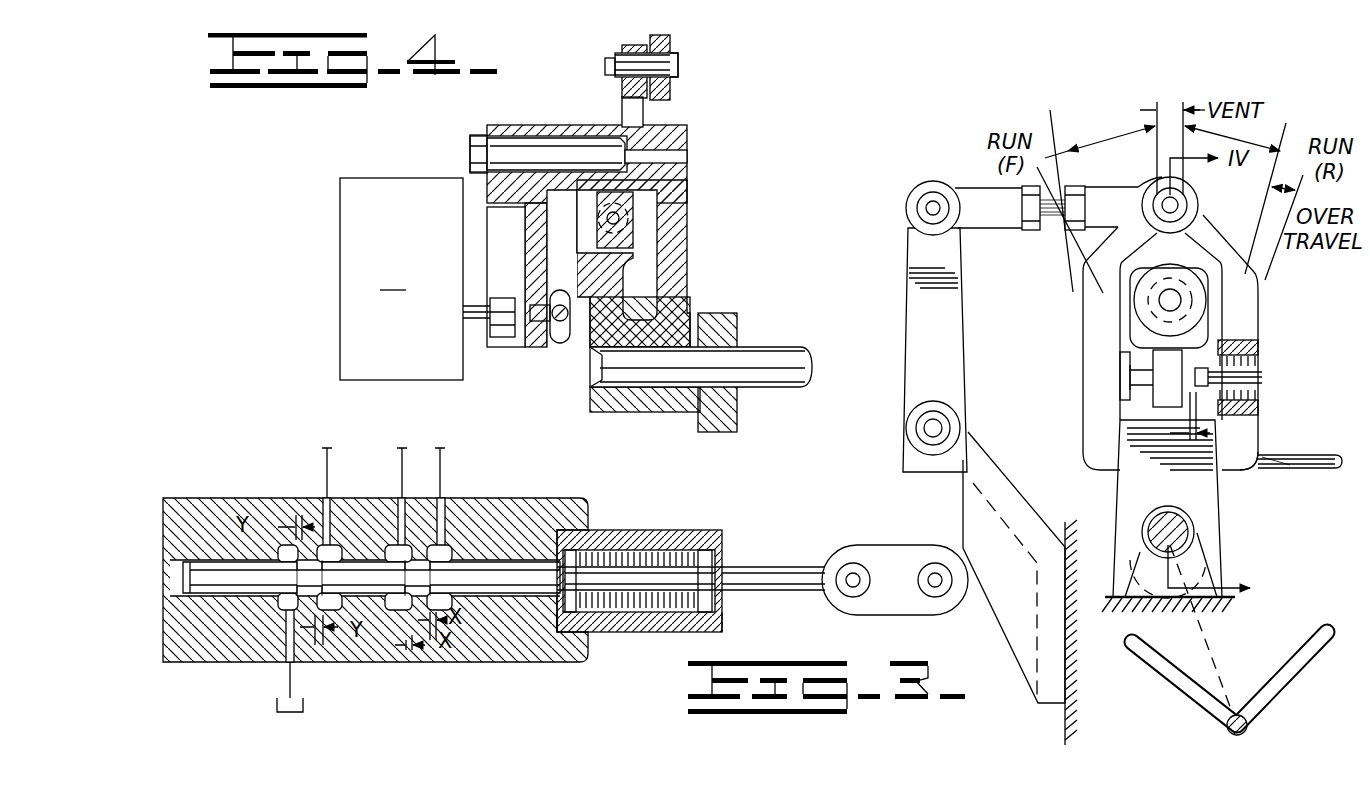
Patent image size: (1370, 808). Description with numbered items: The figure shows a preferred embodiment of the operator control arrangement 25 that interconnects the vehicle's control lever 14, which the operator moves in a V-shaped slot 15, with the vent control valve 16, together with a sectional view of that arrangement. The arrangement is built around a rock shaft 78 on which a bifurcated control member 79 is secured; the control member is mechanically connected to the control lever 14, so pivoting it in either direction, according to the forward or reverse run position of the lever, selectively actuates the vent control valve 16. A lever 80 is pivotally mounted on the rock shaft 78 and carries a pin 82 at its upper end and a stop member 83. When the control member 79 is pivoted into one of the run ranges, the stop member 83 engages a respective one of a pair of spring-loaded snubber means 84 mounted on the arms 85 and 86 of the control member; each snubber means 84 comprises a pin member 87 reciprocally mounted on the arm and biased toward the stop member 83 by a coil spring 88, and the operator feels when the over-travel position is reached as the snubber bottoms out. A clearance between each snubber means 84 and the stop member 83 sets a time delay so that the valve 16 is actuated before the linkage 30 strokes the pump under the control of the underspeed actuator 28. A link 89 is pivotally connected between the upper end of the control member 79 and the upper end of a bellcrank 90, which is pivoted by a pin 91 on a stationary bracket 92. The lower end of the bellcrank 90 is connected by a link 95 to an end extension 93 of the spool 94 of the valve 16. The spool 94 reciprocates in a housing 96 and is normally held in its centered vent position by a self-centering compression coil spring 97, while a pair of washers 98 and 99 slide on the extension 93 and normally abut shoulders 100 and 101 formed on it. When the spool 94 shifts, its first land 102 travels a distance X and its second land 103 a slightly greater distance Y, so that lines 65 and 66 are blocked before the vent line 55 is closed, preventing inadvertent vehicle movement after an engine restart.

In FIG. 3, the control lever 14 is at (1250, 730).
In FIG. 3, the V-shaped slot 15 is at (1288, 686).
In FIG. 3, the vent control valve 16 is at (408, 690).
In FIG. 3, the operator control arrangement 25 is at (890, 190).
In FIG. 4, the underspeed actuator 28 is at (401, 279).
In FIG. 3, the linkage 30 is at (1292, 455).
In FIG. 4, the linkage 30 is at (557, 345).
In FIG. 3, the vent line 55 is at (327, 470).
In FIG. 3, the line 65 is at (440, 472).
In FIG. 3, the line 66 is at (402, 462).
In FIG. 3, the rock shaft 78 is at (1195, 532).
In FIG. 4, the rock shaft 78 is at (770, 350).
In FIG. 3, the bifurcated control member 79 is at (1285, 463).
In FIG. 3, the lever 80 is at (1213, 507).
In FIG. 4, the lever 80 is at (686, 266).
In FIG. 3, the pin 82 is at (1170, 300).
In FIG. 3, the stop member 83 is at (1153, 380).
In FIG. 4, the stop member 83 is at (628, 236).
In FIG. 3, the snubber means 84 is at (1048, 400).
In FIG. 3, the arm 85 is at (1240, 468).
In FIG. 3, the arm 86 is at (1083, 327).
In FIG. 4, the arm 86 is at (595, 400).
In FIG. 3, the pin member 87 is at (1250, 368).
In FIG. 3, the coil spring 88 is at (1255, 392).
In FIG. 3, the link 89 is at (964, 198).
In FIG. 4, the link 89 is at (665, 90).
In FIG. 3, the bellcrank 90 is at (915, 296).
In FIG. 3, the pin 91 is at (930, 428).
In FIG. 3, the stationary bracket 92 is at (1010, 647).
In FIG. 3, the end extension 93 is at (762, 578).
In FIG. 3, the spool 94 is at (512, 573).
In FIG. 3, the link 95 is at (890, 610).
In FIG. 3, the housing 96 is at (478, 662).
In FIG. 3, the compression coil spring 97 is at (652, 548).
In FIG. 3, the washer 98 is at (577, 530).
In FIG. 3, the washer 99 is at (700, 548).
In FIG. 3, the shoulder 100 is at (545, 662).
In FIG. 3, the shoulder 101 is at (718, 632).
In FIG. 3, the first land 102 is at (470, 572).
In FIG. 3, the second land 103 is at (350, 572).